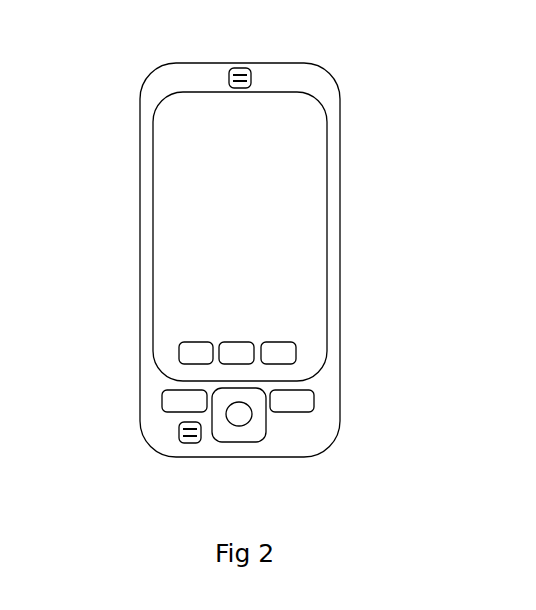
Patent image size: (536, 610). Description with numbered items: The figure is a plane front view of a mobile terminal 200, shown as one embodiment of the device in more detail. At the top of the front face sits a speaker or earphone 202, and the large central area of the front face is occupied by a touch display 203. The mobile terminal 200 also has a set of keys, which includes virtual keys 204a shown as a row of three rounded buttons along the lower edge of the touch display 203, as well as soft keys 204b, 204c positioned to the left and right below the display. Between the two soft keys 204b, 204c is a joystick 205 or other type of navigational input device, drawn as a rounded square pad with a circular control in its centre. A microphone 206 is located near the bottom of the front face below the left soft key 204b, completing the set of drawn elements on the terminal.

The mobile terminal 200 is at (124, 117).
The speaker or earphone 202 is at (237, 67).
The touch display 203 is at (327, 169).
The virtual keys 204a is at (163, 355).
The soft key 204b is at (163, 403).
The soft key 204c is at (315, 403).
The joystick 205 is at (266, 420).
The microphone 206 is at (187, 445).